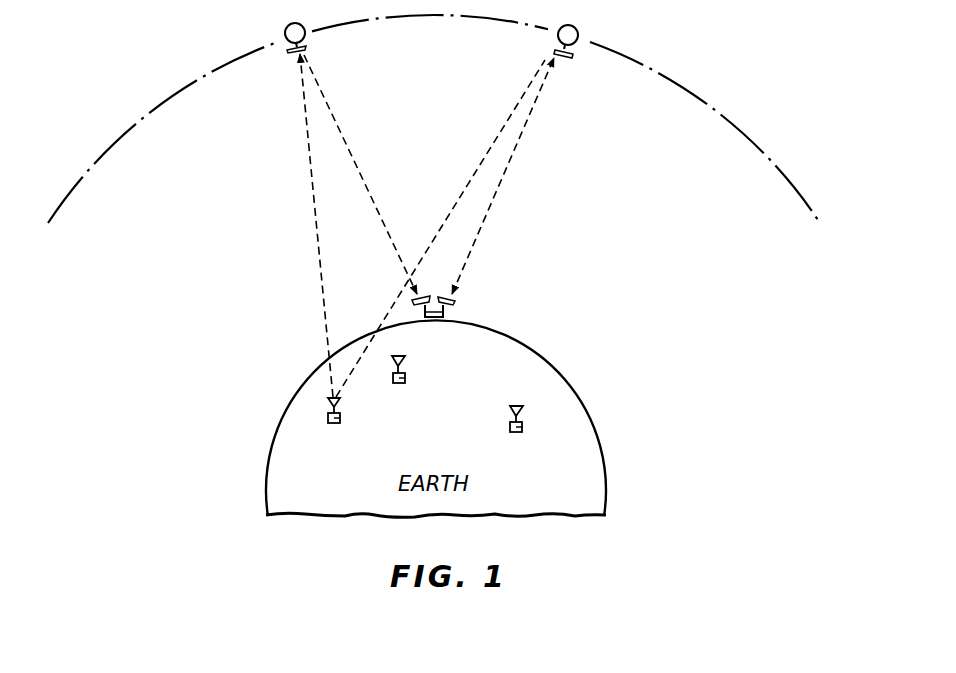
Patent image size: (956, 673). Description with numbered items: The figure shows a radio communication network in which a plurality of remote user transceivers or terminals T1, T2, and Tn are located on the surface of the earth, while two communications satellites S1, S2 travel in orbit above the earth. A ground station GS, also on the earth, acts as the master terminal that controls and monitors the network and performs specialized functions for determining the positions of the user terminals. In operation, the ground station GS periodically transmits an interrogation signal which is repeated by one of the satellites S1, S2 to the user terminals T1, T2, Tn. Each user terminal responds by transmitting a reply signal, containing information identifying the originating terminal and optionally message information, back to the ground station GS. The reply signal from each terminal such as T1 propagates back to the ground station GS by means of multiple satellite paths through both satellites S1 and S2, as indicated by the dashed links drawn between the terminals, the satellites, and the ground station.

The communications satellite S1 is at (288, 28).
The communications satellite S2 is at (577, 30).
The ground station GS is at (445, 312).
The remote user terminal T1 is at (341, 419).
The remote user terminal T2 is at (406, 378).
The remote user terminal Tn is at (523, 428).